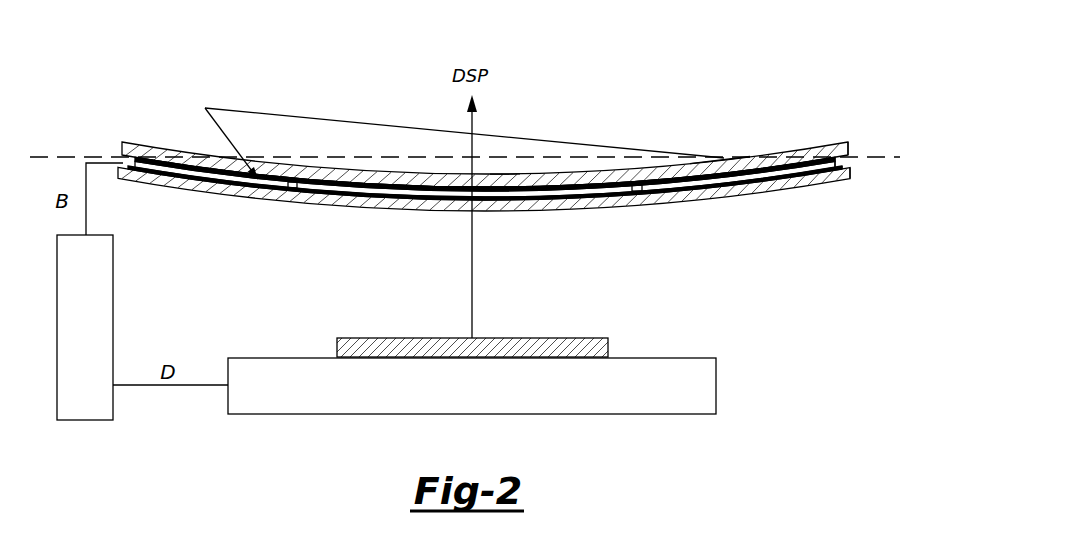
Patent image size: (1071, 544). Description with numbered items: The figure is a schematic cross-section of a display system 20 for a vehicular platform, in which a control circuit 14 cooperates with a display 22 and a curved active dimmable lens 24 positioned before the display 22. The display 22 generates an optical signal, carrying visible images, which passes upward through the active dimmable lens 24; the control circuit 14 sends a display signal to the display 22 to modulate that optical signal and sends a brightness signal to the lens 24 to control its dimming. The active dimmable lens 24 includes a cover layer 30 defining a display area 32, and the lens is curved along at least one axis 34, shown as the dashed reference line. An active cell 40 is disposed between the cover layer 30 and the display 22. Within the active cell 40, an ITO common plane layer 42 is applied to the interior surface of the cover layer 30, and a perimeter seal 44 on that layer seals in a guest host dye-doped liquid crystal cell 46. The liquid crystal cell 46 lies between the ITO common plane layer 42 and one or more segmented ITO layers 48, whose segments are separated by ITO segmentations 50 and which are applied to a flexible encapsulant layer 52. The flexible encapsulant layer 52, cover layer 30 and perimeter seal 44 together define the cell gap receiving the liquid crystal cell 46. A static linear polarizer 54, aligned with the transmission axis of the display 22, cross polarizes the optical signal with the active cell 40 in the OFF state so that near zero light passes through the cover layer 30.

The control circuit 14 is at (86, 420).
The display system 20 is at (722, 88).
The display 22 is at (716, 386).
The active dimmable lens 24 is at (123, 138).
The cover layer 30 is at (720, 160).
The display area 32 is at (504, 176).
The axis 34 is at (70, 156).
The active cell 40 is at (851, 156).
The ITO common plane layer 42 is at (793, 164).
The perimeter seal 44 is at (126, 168).
The liquid crystal cell 46 is at (353, 191).
The segmented ITO layers 48 is at (205, 108).
The ITO segmentations 50 is at (296, 182).
The flexible encapsulant layer 52 is at (778, 177).
The linear polarizer 54 is at (748, 190).